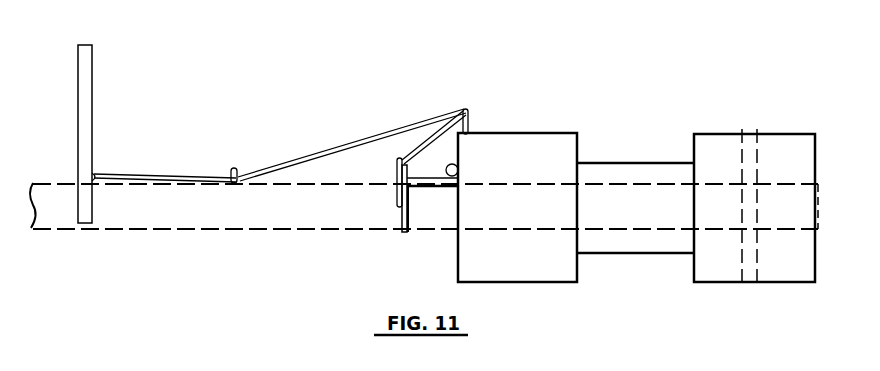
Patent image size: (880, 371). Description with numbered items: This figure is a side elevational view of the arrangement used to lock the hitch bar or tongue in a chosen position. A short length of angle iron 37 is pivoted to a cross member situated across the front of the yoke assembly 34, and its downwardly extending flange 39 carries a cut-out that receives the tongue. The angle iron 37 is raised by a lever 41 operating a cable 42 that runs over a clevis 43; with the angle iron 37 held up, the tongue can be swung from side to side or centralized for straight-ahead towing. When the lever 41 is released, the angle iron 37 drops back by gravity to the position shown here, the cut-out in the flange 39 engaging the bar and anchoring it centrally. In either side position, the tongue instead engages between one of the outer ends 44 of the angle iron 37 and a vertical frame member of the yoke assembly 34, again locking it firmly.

The yoke assembly 34 is at (563, 152).
The angle iron 37 is at (428, 188).
The downwardly extending flange 39 is at (407, 232).
The lever 41 is at (88, 137).
The cable 42 is at (352, 143).
The clevis 43 is at (467, 118).
The outer ends 44 is at (397, 205).